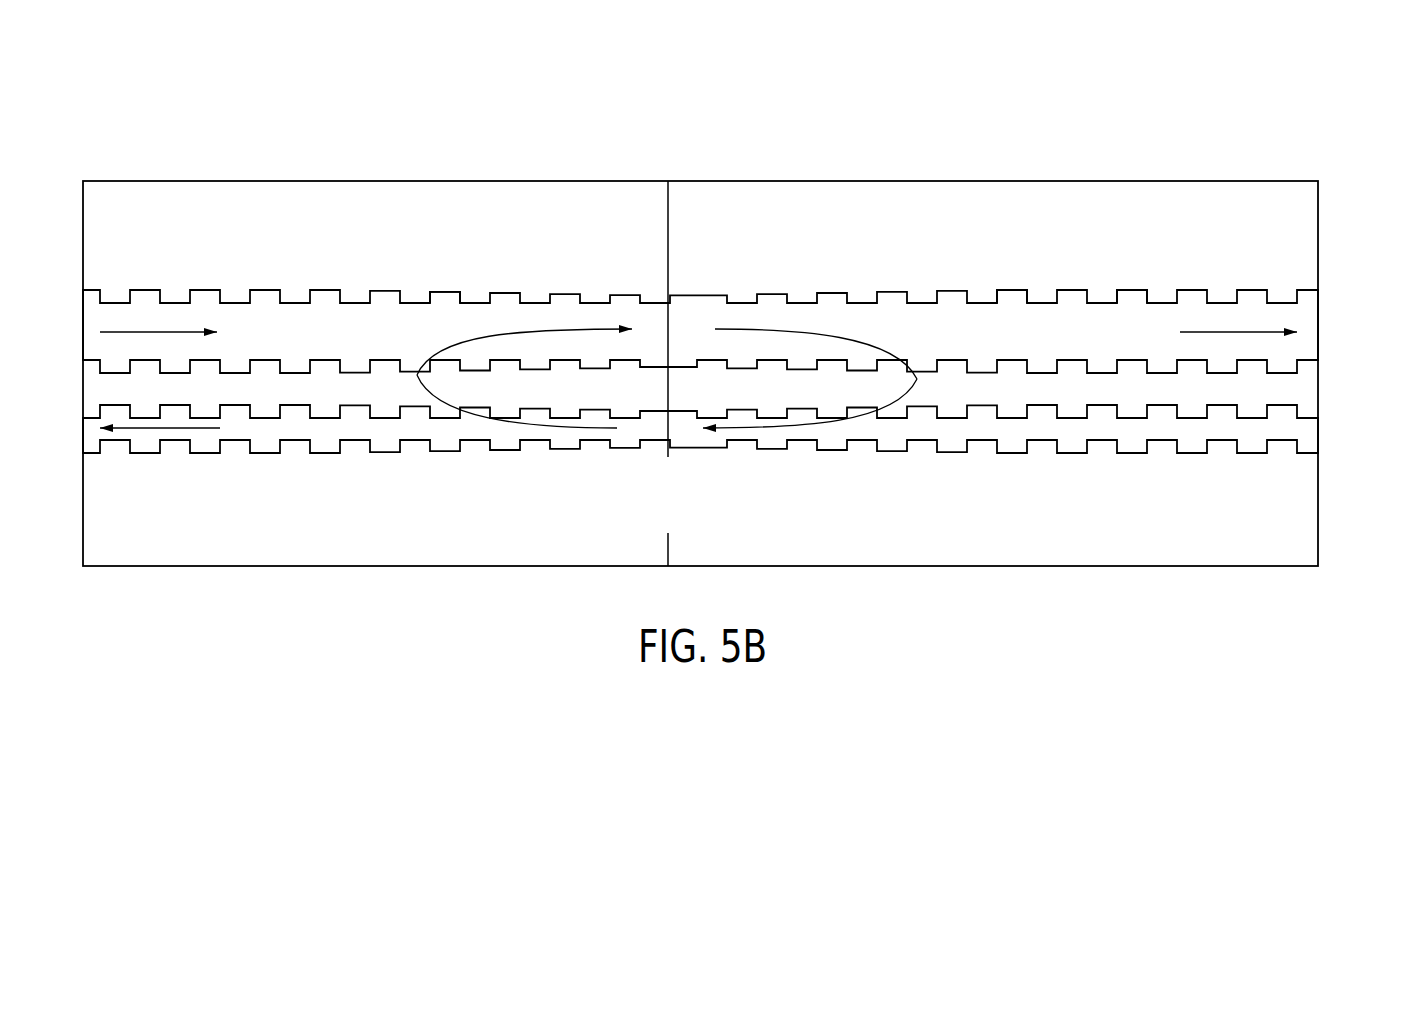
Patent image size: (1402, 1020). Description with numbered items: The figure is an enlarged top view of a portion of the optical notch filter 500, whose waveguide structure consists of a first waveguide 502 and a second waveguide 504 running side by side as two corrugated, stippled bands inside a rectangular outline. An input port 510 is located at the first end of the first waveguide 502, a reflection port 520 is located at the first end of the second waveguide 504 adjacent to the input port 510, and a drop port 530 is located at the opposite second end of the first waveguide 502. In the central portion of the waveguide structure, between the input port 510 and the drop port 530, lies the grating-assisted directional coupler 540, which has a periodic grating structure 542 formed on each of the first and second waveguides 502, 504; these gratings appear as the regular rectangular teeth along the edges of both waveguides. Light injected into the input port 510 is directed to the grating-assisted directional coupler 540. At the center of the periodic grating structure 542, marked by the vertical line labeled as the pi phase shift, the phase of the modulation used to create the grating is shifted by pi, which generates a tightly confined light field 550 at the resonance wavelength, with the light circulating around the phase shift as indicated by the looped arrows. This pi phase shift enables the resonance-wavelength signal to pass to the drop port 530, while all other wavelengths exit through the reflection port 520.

The optical notch filter 500 is at (318, 158).
The first waveguide 502 is at (297, 298).
The second waveguide 504 is at (293, 442).
The input port 510 is at (88, 325).
The reflection port 520 is at (88, 437).
The drop port 530 is at (1317, 312).
The grating-assisted directional coupler 540 is at (445, 278).
The periodic grating structure 542 is at (1015, 293).
The tightly confined light field 550 is at (915, 380).